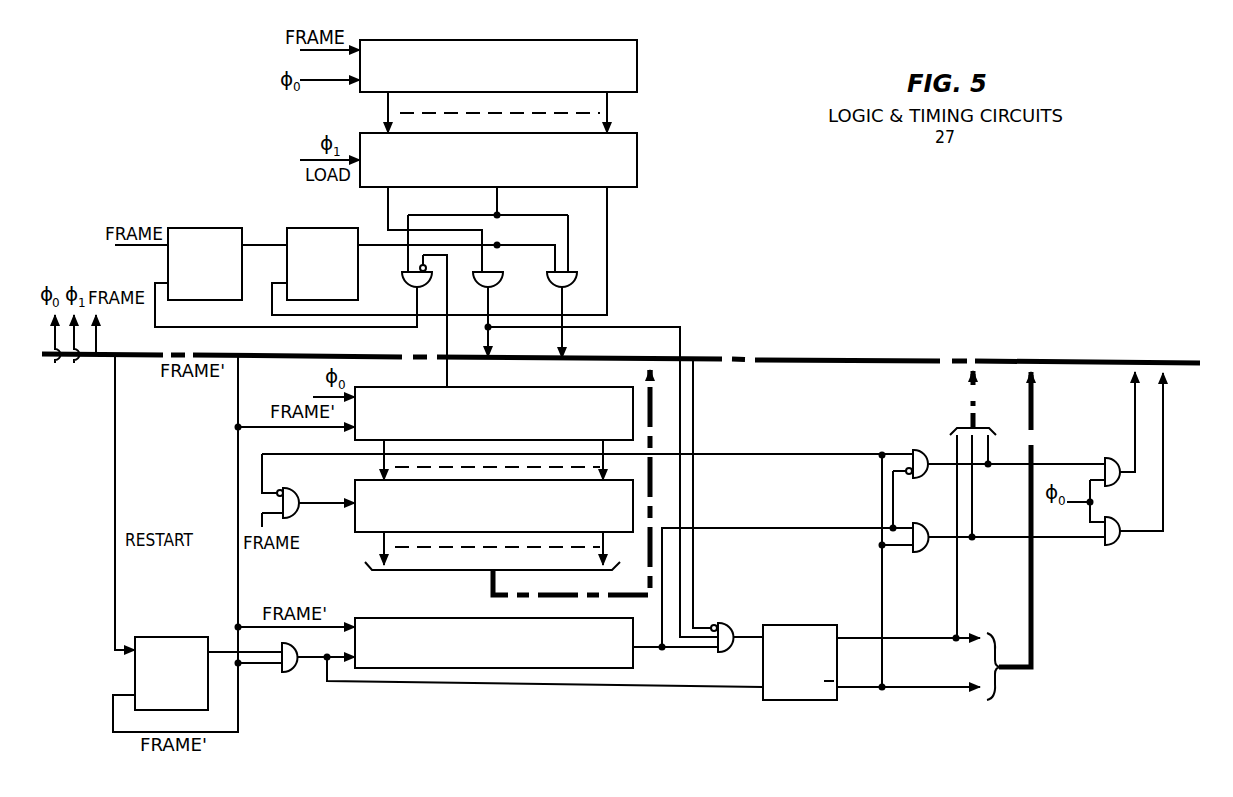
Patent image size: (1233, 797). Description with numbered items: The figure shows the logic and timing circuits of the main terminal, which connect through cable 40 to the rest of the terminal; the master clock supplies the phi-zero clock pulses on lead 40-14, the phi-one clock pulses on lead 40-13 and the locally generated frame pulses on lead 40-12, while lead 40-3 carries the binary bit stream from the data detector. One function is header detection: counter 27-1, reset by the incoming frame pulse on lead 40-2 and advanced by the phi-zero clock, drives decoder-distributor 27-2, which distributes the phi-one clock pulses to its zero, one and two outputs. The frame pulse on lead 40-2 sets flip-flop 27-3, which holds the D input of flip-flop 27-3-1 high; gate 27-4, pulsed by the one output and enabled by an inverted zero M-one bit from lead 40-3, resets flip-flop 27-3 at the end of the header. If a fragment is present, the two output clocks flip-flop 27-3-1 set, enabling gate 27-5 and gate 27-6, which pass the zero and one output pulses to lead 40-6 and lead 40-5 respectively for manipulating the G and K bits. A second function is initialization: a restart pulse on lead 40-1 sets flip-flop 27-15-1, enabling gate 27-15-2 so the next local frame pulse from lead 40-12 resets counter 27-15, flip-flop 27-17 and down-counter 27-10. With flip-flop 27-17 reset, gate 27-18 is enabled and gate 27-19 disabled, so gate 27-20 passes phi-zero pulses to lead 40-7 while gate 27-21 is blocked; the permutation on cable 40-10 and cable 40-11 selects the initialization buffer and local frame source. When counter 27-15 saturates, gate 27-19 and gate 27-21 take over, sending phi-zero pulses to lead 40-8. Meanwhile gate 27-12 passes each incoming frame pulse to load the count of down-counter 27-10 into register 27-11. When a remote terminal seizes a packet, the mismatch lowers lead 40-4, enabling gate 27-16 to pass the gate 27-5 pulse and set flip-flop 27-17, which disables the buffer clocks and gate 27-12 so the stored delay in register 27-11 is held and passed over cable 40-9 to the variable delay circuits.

The counter 27-1 is at (637, 58).
The decoder-distributor 27-2 is at (637, 165).
The flip-flop 27-3 is at (205, 228).
The flip-flop 27-3-1 is at (326, 218).
The gate 27-4 is at (405, 288).
The gate 27-5 is at (499, 288).
The gate 27-6 is at (573, 288).
The down-counter 27-10 is at (454, 385).
The register 27-11 is at (352, 520).
The gate 27-12 is at (296, 487).
The counter 27-15 is at (462, 618).
The flip-flop 27-15-1 is at (140, 637).
The gate 27-15-2 is at (293, 673).
The gate 27-16 is at (731, 622).
The flip-flop 27-17 is at (790, 700).
The gate 27-18 is at (918, 479).
The gate 27-19 is at (918, 553).
The gate 27-20 is at (1116, 487).
The gate 27-21 is at (1118, 546).
The cable 40 is at (822, 358).
The lead 40-1 is at (117, 428).
The lead 40-2 is at (98, 343).
The lead 40-3 is at (445, 350).
The lead 40-4 is at (695, 398).
The lead 40-5 is at (566, 343).
The lead 40-6 is at (492, 343).
The lead 40-7 is at (1133, 388).
The lead 40-8 is at (1165, 422).
The cable 40-9 is at (646, 377).
The cable 40-10 is at (968, 403).
The cable 40-11 is at (1034, 414).
The lead 40-12 is at (240, 373).
The lead 40-13 is at (85, 348).
The lead 40-14 is at (59, 364).